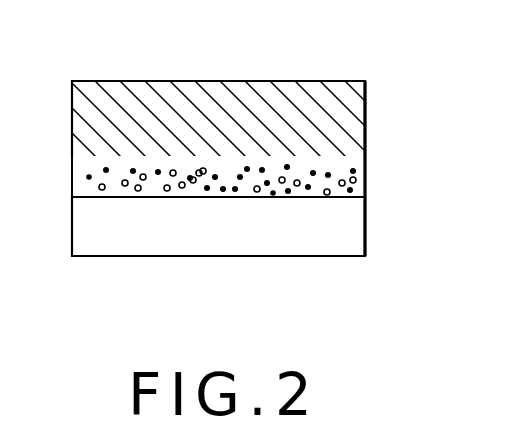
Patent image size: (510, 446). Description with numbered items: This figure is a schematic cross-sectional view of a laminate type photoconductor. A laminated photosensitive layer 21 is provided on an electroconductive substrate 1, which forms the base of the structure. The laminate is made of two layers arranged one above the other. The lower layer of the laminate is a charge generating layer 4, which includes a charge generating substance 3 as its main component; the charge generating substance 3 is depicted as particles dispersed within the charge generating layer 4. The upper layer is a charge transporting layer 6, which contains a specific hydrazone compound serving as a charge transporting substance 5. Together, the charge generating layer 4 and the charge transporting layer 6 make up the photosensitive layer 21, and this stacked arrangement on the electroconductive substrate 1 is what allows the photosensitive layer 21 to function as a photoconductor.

The electroconductive substrate 1 is at (355, 236).
The charge generating substance 3 is at (104, 170).
The charge generating layer 4 is at (357, 176).
The charge transporting substance 5 is at (133, 89).
The charge transporting layer 6 is at (362, 110).
The laminated photosensitive layer 21 is at (451, 98).